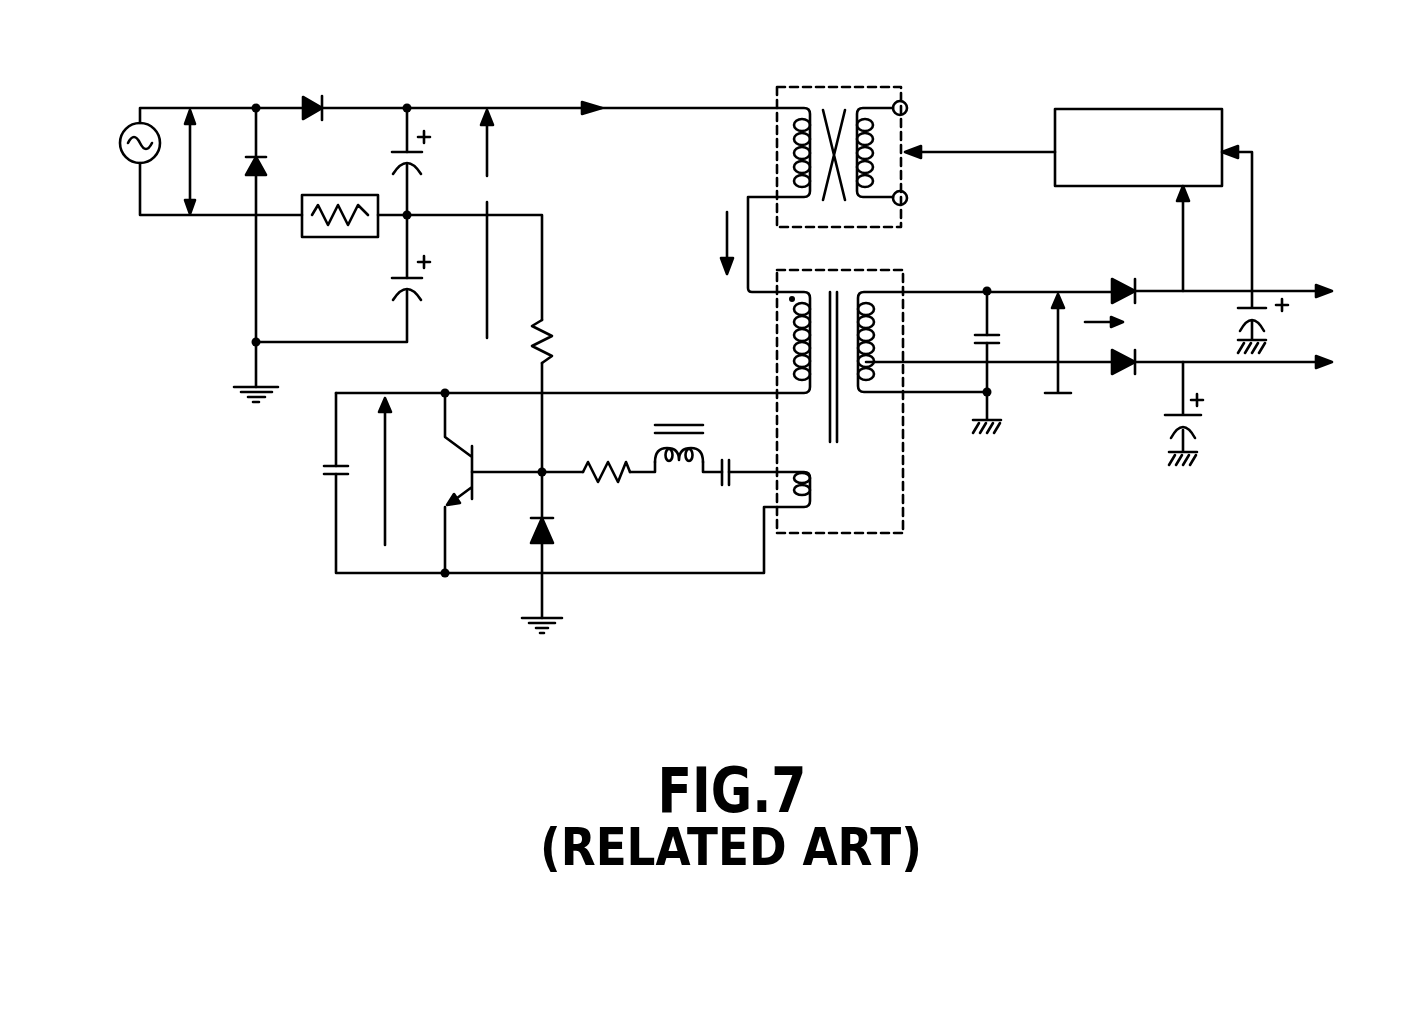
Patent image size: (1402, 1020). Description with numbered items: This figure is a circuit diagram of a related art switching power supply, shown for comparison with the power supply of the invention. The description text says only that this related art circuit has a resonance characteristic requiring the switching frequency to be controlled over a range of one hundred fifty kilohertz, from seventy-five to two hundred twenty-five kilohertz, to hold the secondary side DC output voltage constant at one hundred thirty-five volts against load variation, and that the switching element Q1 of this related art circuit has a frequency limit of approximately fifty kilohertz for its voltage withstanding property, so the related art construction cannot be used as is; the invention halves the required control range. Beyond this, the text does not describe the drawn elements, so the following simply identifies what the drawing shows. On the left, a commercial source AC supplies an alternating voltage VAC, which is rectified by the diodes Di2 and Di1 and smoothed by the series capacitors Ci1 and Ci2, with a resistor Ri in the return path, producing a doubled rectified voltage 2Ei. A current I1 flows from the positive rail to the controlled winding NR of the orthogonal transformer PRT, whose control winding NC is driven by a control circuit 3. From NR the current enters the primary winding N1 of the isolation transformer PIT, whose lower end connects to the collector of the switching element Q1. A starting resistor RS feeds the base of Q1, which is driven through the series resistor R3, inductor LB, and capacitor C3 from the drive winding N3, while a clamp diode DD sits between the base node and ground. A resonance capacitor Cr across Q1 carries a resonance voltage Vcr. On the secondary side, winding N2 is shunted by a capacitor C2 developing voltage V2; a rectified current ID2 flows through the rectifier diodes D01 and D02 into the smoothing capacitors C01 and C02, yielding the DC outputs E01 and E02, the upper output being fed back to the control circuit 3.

The commercial AC power supply AC is at (127, 132).
The AC input voltage VAC is at (200, 162).
The rectifier diode Di2 is at (323, 94).
The rectifier diode Di1 is at (283, 161).
The smoothing capacitor Ci1 is at (385, 152).
The smoothing capacitor Ci2 is at (385, 280).
The rush current limiting resistor Ri is at (340, 229).
The primary side current I1 is at (593, 94).
The rectified smoothed voltage (twice Ei) 2Ei is at (487, 224).
The starting resistor RS is at (560, 341).
The orthogonal control transformer PRT is at (839, 142).
The controlled winding (inductance LR) NR is at (785, 160).
The control winding NC is at (880, 176).
The control circuit 3 is at (1155, 109).
The power isolation transformer PIT is at (840, 421).
The primary winding (inductance L1) N1 is at (785, 340).
The secondary winding (inductance L2) N2 is at (885, 318).
The drive winding N3 is at (800, 470).
The secondary side parallel resonance capacitor C2 is at (1000, 325).
The secondary side resonance voltage V2 is at (1058, 343).
The secondary side rectified current ID2 is at (1126, 323).
The secondary side rectifier diode D01 is at (1120, 276).
The secondary side rectifier diode D02 is at (1120, 379).
The smoothing capacitor C01 is at (1281, 322).
The smoothing capacitor C02 is at (1212, 413).
The secondary side DC output voltage E01 is at (1256, 292).
The secondary side DC output voltage E02 is at (1256, 365).
The primary side parallel resonance capacitor Cr is at (324, 488).
The resonance voltage across Cr Vcr is at (386, 471).
The switching element Q1 is at (448, 483).
The clamp diode DD is at (518, 533).
The base current limiting resistor R3 is at (606, 459).
The drive inductor LB is at (679, 467).
The resonance capacitor of self-excited oscillation drive circuit C3 is at (743, 484).